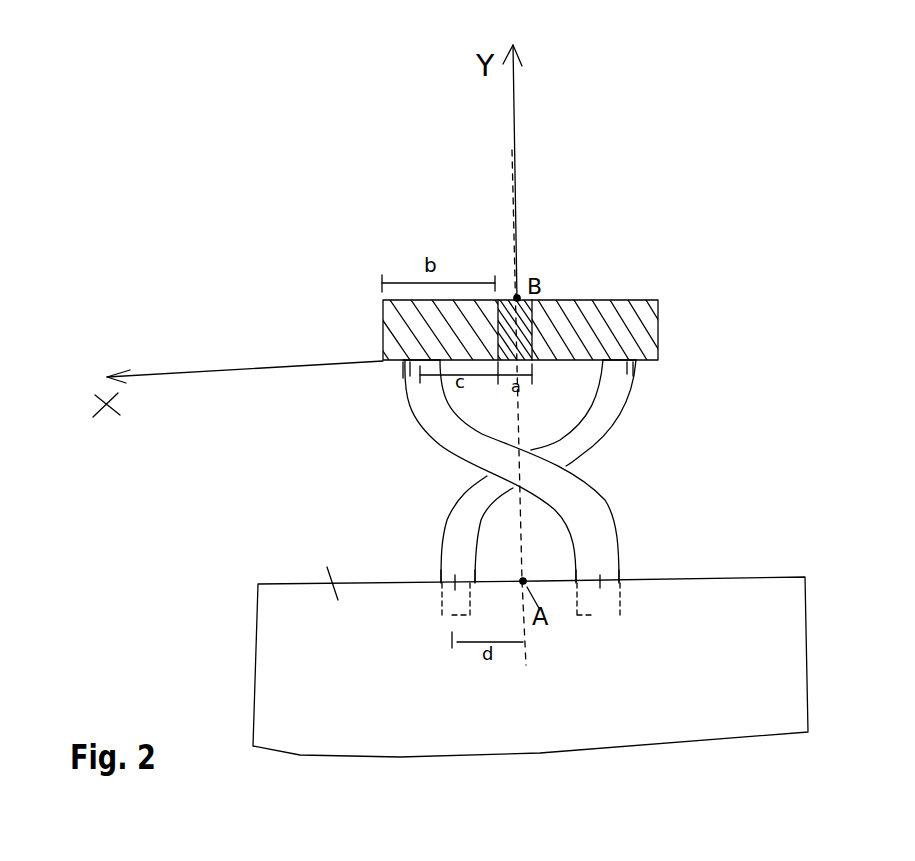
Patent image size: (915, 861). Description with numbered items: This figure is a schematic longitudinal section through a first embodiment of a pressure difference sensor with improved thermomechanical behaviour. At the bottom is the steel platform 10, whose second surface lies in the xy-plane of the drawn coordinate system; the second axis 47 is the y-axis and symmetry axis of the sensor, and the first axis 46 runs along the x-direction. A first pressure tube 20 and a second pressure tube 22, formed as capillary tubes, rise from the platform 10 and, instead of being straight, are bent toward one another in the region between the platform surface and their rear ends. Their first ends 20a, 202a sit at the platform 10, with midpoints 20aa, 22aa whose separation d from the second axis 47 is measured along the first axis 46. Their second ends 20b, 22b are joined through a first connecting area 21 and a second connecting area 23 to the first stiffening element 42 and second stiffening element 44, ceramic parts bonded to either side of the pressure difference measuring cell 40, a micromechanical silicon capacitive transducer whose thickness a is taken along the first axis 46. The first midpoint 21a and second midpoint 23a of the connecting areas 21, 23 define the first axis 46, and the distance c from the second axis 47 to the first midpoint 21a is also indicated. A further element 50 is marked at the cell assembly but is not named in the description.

The platform 10 is at (808, 652).
The first pressure tube 20 is at (597, 423).
The first wire end at substrate 20a is at (436, 578).
The midpoint of the first end of the first pressure tube 20aa is at (450, 593).
The second end of the first capillary tube 20b is at (751, 381).
The first connecting area 21 is at (648, 363).
The first midpoint 21a is at (632, 364).
The second pressure tube 22 is at (437, 425).
The midpoint of the first end of the second pressure tube 22aa is at (603, 597).
The second end of the second capillary tube 22b is at (398, 367).
The second connecting area 23 is at (336, 388).
The second midpoint 23a is at (410, 368).
The second wire end at substrate 202a is at (627, 572).
The pressure difference measuring cell 40 is at (511, 293).
The first stiffening element 42 is at (383, 338).
The second stiffening element 44 is at (658, 328).
The first axis 46 is at (143, 375).
The second axis 47 is at (515, 107).
The insulating middle piece 50 is at (536, 324).